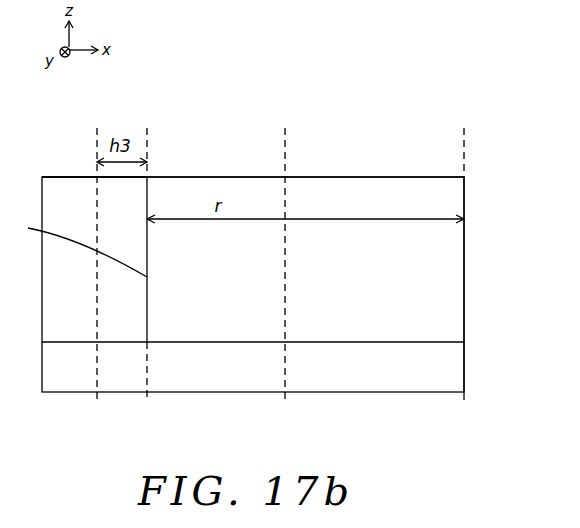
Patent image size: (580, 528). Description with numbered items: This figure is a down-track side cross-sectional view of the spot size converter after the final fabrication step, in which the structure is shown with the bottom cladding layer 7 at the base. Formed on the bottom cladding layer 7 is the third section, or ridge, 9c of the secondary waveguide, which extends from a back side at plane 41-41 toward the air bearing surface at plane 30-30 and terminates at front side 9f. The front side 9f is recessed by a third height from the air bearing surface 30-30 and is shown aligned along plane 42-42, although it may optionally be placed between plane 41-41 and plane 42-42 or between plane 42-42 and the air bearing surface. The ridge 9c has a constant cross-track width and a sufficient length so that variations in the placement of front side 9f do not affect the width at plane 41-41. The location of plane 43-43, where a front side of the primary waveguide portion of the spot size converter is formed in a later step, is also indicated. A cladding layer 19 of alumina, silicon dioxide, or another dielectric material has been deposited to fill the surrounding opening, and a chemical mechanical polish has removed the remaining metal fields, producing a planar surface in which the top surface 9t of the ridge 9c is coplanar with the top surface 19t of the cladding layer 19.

The bottom cladding layer 7 is at (450, 372).
The third section (ridge) of the secondary waveguide 9c is at (450, 263).
The front side 9f is at (75, 246).
The top surface of front section 9t is at (363, 176).
The cladding layer 19 is at (60, 295).
The top surface of the cladding layer 19t is at (60, 176).
The ABS plane 30- 30 is at (97, 267).
The plane 41- 41 is at (464, 267).
The plane 42- 42 is at (147, 267).
The plane 43- 43 is at (287, 267).